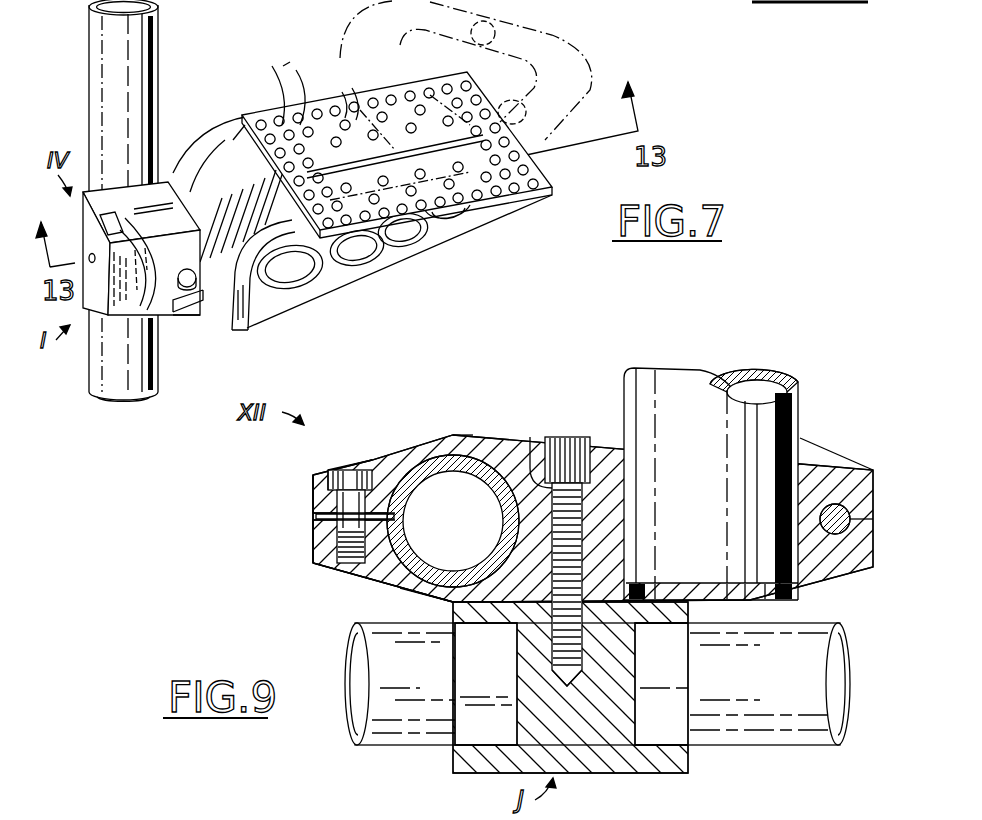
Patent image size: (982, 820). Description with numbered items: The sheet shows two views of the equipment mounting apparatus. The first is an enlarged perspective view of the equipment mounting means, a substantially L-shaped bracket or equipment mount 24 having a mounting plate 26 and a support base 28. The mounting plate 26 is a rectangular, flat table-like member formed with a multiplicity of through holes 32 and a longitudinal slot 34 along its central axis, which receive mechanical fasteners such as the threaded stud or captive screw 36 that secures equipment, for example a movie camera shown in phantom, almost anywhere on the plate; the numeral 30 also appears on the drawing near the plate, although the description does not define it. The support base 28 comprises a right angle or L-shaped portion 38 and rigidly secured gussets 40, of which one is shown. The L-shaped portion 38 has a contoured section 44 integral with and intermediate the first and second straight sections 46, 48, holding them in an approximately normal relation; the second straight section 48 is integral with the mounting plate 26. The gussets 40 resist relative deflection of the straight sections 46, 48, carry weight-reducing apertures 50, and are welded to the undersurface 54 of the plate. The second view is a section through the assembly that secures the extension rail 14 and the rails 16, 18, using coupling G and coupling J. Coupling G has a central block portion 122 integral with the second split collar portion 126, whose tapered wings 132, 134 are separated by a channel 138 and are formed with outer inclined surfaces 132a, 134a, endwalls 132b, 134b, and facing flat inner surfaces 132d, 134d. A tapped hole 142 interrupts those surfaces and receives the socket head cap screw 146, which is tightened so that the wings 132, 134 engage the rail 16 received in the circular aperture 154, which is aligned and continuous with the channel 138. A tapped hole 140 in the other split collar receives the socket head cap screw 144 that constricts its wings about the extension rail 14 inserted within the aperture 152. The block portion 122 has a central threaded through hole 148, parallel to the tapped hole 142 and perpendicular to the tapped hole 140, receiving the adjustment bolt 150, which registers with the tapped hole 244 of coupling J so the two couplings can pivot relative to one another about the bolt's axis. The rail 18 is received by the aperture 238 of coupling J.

In FIG. 7, the extension rail 14 is at (156, 26).
In FIG. 9, the extension rail 14 is at (706, 429).
In FIG. 9, the rail 16 is at (490, 490).
In FIG. 9, the rail 18 is at (830, 622).
In FIG. 7, the equipment mount 24 is at (538, 92).
In FIG. 7, the mounting plate 26 is at (522, 108).
In FIG. 7, the support base 28 is at (248, 332).
In FIG. 7, the perforated plate 30 is at (545, 153).
In FIG. 7, the through holes 32 is at (292, 75).
In FIG. 7, the longitudinal slot 34 is at (466, 122).
In FIG. 7, the captive screw 36 is at (352, 95).
In FIG. 7, the L-shaped portion 38 is at (255, 270).
In FIG. 7, the gussets 40 is at (403, 253).
In FIG. 7, the contoured section 44 is at (200, 157).
In FIG. 7, the first straight section 46 is at (223, 300).
In FIG. 7, the second straight section 48 is at (233, 140).
In FIG. 7, the apertures 50 is at (347, 263).
In FIG. 7, the undersurface 54 is at (447, 230).
In FIG. 9, the central block portion 122 is at (600, 440).
In FIG. 9, the second split collar portion 126 is at (290, 510).
In FIG. 9, the tapered wing 132 is at (400, 458).
In FIG. 9, the outer inclined surface 132a is at (358, 445).
In FIG. 9, the endwall 132b is at (313, 478).
In FIG. 9, the flat inner surface 132d is at (323, 518).
In FIG. 9, the tapered wing 134 is at (370, 572).
In FIG. 9, the outer inclined surface 134a is at (440, 600).
In FIG. 9, the endwall 134b is at (316, 560).
In FIG. 9, the flat inner surface 134d is at (318, 530).
In FIG. 9, the channel 138 is at (320, 524).
In FIG. 9, the tapped hole 140 is at (838, 505).
In FIG. 9, the tapped hole 142 is at (325, 494).
In FIG. 9, the socket head cap screw 144 is at (860, 522).
In FIG. 9, the socket head cap screw 146 is at (350, 470).
In FIG. 9, the threaded through hole 148 is at (530, 440).
In FIG. 9, the adjustment bolt 150 is at (563, 440).
In FIG. 9, the circular aperture 152 is at (803, 442).
In FIG. 9, the circular aperture 154 is at (448, 440).
In FIG. 9, the aperture 238 is at (697, 748).
In FIG. 9, the tapped hole 244 is at (552, 650).